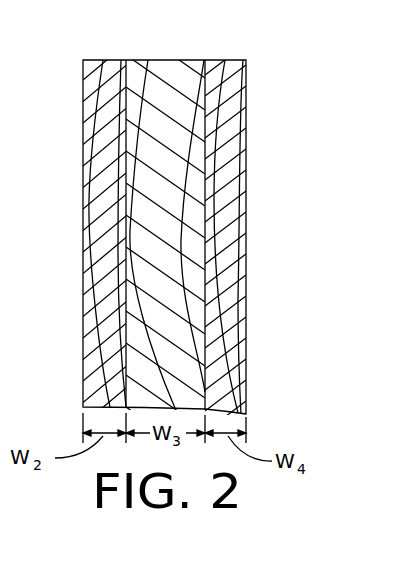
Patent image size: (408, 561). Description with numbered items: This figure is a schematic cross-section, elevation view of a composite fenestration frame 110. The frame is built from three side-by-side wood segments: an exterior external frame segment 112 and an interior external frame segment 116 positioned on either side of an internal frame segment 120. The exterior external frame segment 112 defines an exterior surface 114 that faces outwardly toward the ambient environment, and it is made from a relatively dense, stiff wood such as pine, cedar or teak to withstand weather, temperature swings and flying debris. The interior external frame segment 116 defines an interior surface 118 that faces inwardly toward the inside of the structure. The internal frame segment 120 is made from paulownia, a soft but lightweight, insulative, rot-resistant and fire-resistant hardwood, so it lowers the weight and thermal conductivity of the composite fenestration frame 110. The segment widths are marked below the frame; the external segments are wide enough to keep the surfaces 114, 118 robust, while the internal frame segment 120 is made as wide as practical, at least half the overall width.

The composite fenestration frame 110 is at (284, 61).
The exterior external frame segment 112 is at (100, 124).
The exterior surface 114 is at (83, 258).
The interior external frame segment 116 is at (228, 132).
The interior surface 118 is at (246, 263).
The internal frame segment 120 is at (160, 62).